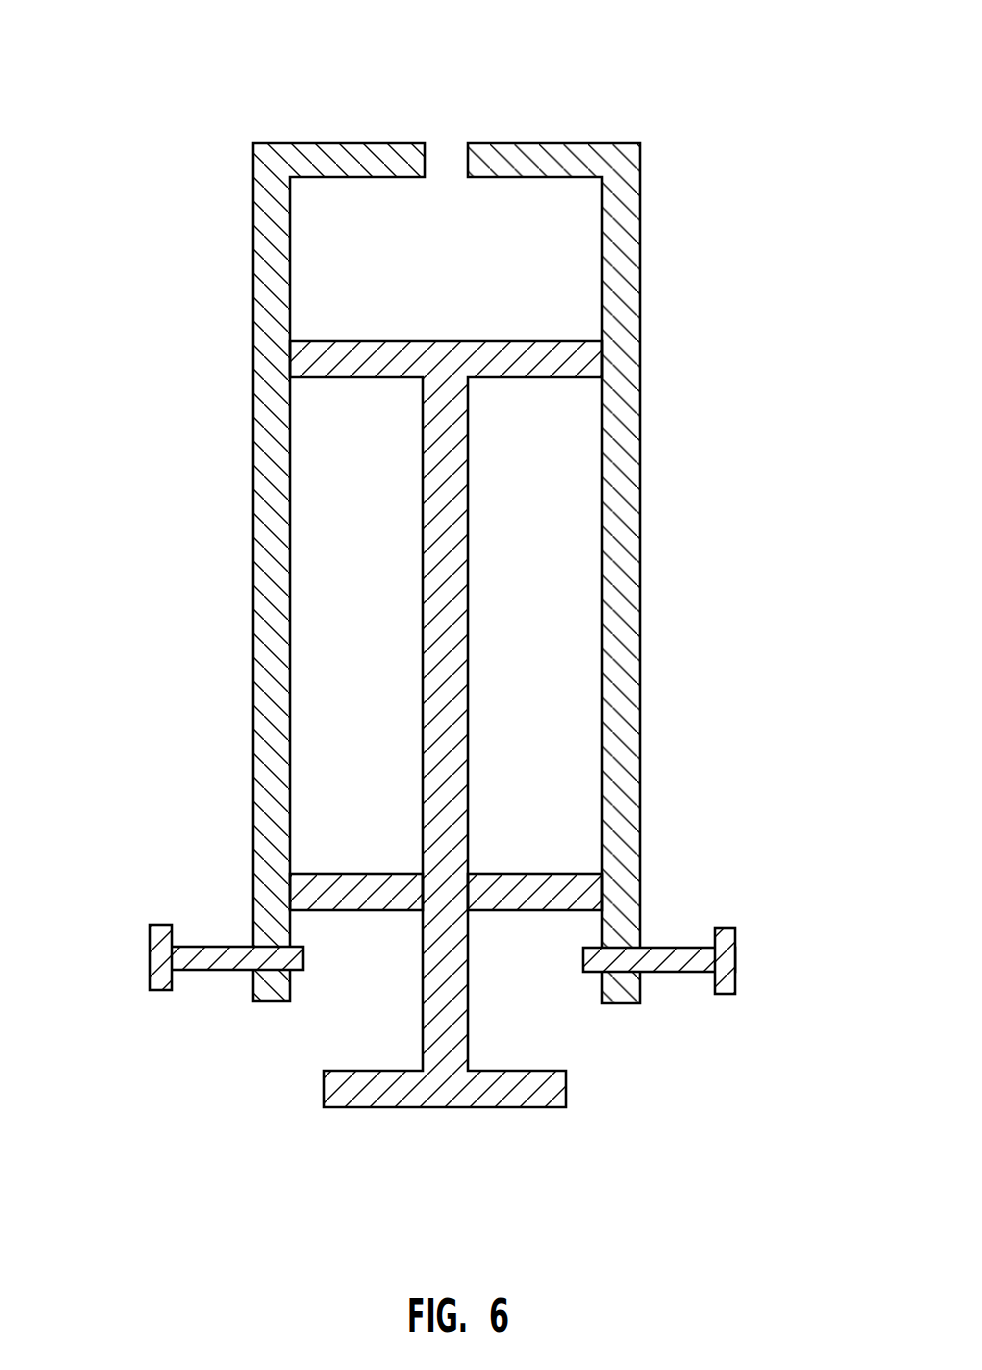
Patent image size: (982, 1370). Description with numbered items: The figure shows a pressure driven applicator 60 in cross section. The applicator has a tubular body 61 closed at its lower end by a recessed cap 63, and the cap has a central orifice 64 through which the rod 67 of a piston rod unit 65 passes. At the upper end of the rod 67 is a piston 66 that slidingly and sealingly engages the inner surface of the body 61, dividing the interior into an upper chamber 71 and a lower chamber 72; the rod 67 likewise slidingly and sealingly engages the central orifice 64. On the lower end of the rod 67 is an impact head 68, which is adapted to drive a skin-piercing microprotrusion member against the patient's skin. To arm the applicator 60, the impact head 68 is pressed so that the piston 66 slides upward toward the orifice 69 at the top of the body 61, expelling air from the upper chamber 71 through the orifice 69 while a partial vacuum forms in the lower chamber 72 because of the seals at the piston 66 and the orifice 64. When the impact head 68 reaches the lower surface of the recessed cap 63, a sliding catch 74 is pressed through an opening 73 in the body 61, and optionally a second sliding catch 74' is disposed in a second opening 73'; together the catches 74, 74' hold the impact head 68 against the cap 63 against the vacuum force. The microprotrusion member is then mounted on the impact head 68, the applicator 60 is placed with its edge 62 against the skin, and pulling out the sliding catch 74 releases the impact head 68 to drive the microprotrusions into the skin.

The pressure driven applicator 60 is at (220, 143).
The tubular body 61 is at (270, 227).
The edge 62 is at (623, 1005).
The recessed cap 63 is at (547, 893).
The central orifice 64 is at (467, 884).
The piston rod unit 65 is at (423, 1005).
The piston 66 is at (565, 362).
The rod 67 is at (447, 807).
The impact head 68 is at (480, 1090).
The orifice 69 is at (447, 157).
The upper chamber 71 is at (558, 258).
The lower chamber 72 is at (555, 560).
The opening 73 is at (716, 917).
The opening 73' is at (160, 880).
The sliding catch 74 is at (715, 962).
The second sliding catch 74' is at (168, 955).